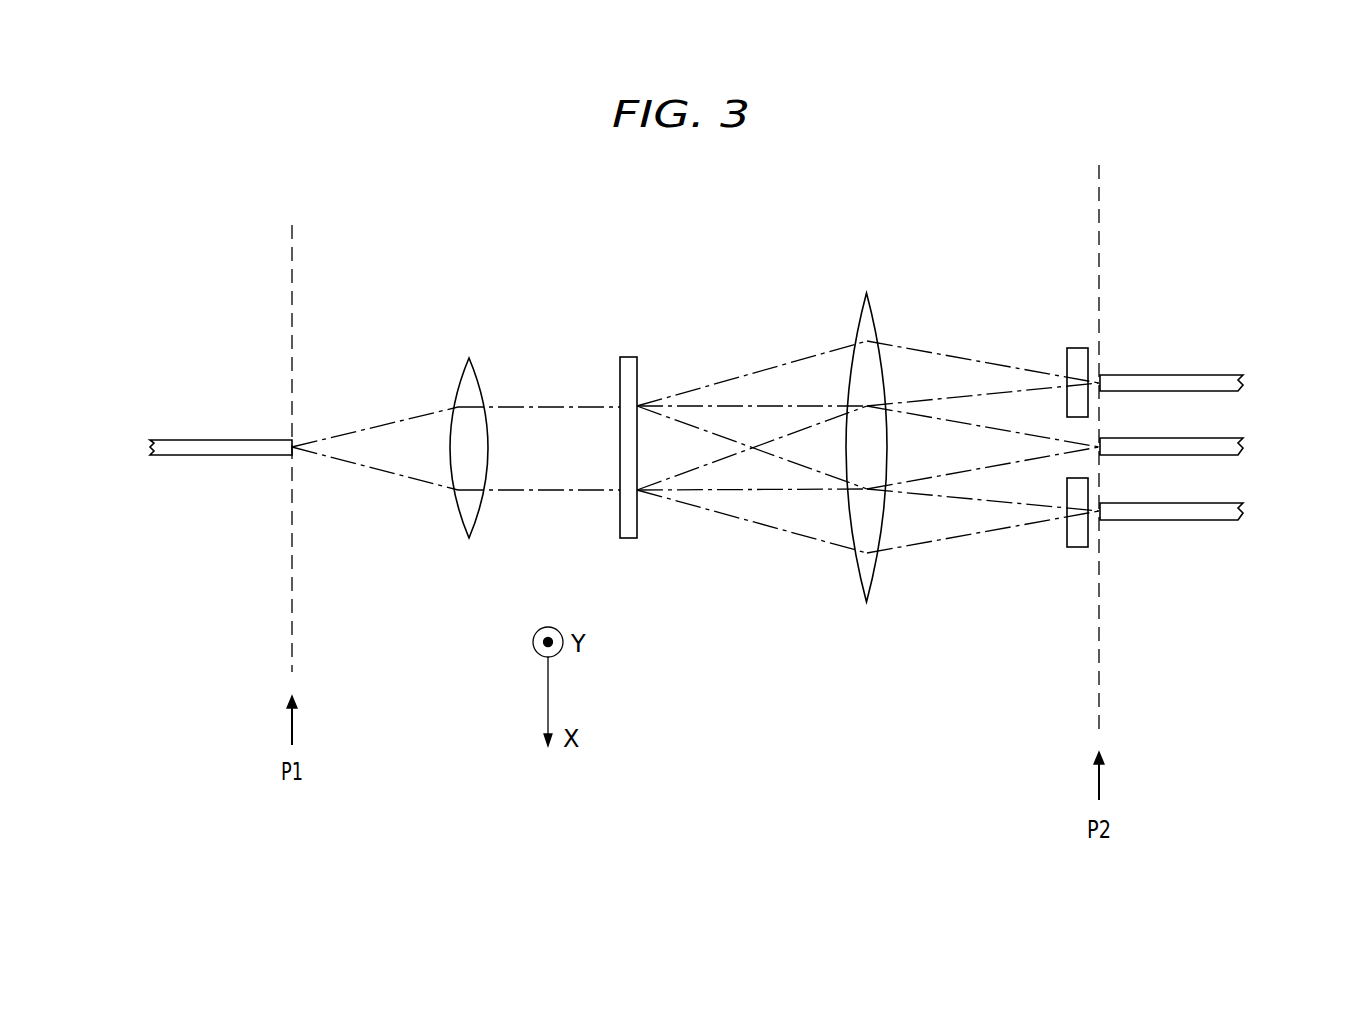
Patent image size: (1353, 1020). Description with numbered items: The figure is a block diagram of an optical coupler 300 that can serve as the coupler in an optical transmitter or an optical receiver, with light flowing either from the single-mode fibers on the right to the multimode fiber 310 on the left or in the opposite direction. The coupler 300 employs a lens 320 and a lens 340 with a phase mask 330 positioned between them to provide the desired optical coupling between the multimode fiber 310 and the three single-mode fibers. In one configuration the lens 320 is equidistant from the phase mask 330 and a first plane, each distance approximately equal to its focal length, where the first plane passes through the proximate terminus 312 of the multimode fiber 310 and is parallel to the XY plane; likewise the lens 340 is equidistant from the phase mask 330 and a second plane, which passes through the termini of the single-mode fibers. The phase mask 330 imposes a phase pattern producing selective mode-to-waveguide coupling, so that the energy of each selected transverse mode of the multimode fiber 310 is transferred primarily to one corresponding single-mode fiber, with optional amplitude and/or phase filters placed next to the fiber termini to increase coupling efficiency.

The optical coupler 300 is at (698, 185).
The multimode fiber 310 is at (224, 456).
The proximate terminus 312 is at (306, 460).
The lens 320 is at (458, 380).
The phase mask 330 is at (619, 370).
The lens 340 is at (857, 326).